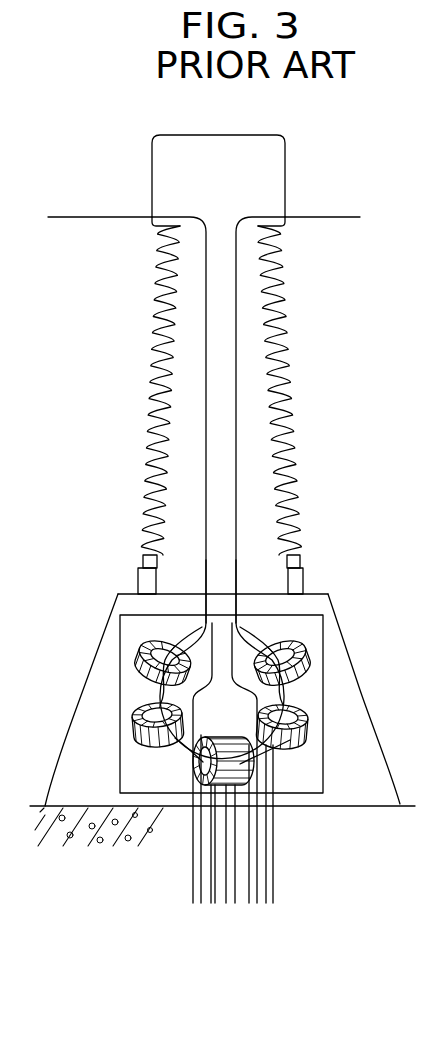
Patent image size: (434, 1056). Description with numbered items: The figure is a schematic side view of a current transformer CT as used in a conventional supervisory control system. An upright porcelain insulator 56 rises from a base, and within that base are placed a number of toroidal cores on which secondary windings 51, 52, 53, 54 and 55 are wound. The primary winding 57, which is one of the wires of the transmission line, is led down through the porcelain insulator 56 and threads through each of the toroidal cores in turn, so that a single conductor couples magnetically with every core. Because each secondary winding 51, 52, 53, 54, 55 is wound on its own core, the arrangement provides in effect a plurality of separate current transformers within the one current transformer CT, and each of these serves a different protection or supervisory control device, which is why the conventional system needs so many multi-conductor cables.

The current transformer CT is at (316, 120).
The secondary winding 51 is at (178, 660).
The secondary winding 52 is at (133, 716).
The secondary winding 53 is at (197, 770).
The secondary winding 54 is at (304, 742).
The secondary winding 55 is at (300, 678).
The porcelain insulator 56 is at (277, 306).
The primary winding 57 is at (237, 543).